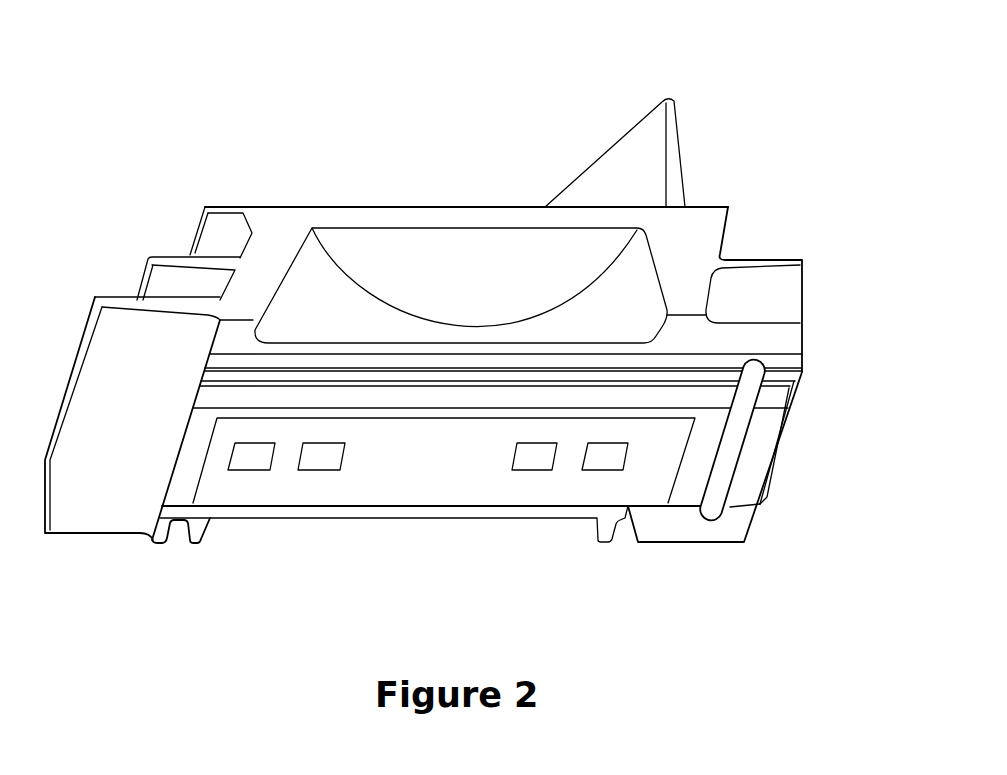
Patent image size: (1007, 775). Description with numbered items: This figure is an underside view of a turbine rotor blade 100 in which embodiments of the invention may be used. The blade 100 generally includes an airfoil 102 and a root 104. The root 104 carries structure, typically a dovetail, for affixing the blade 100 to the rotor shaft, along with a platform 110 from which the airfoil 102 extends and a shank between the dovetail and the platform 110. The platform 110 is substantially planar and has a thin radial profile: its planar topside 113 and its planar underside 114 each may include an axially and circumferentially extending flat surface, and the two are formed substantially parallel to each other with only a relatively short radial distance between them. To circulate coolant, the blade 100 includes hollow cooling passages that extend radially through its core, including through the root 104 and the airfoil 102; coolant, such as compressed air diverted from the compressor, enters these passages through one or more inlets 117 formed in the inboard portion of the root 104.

The turbine rotor blade 100 is at (176, 75).
The airfoil 102 is at (633, 152).
The root 104 is at (824, 413).
The platform 110 is at (214, 188).
The planar topside 113 is at (357, 206).
The planar underside 114 is at (489, 298).
The inlets 117 is at (252, 458).